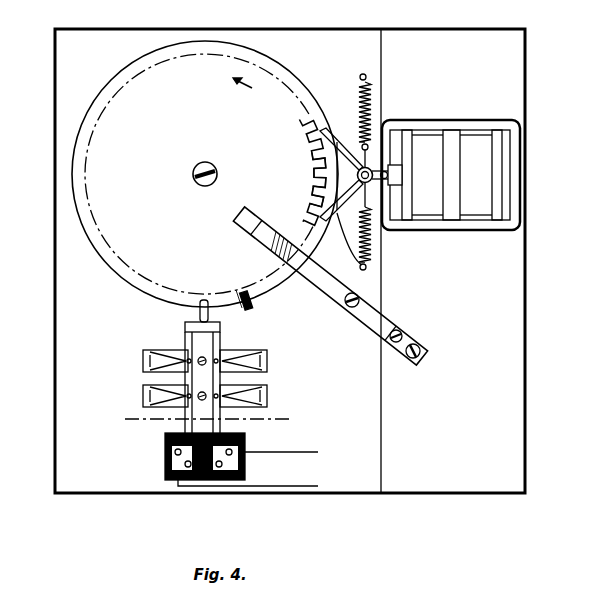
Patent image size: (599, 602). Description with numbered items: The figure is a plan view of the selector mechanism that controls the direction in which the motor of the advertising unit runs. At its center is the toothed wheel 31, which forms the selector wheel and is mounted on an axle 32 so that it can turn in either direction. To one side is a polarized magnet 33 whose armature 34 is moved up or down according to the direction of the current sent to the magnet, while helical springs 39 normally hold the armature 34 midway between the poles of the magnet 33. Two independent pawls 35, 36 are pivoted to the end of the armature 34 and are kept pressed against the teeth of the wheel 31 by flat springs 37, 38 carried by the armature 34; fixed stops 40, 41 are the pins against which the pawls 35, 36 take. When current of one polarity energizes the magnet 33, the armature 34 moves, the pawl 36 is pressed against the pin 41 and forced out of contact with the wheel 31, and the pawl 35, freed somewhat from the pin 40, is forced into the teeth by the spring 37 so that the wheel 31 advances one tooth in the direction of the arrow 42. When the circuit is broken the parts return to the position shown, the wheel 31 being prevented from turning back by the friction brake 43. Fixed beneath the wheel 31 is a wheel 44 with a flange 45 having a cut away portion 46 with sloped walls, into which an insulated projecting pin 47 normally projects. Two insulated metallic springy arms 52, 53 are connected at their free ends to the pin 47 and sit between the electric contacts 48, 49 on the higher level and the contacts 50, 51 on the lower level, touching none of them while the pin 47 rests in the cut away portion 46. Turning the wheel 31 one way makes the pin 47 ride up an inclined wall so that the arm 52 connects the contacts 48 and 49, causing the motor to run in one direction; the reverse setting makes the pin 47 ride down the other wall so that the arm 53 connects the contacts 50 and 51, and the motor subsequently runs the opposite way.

The toothed wheel 31 is at (176, 291).
The axle 32 is at (194, 173).
The polarized magnet 33 is at (503, 224).
The armature 34 is at (393, 170).
The pawl 35 is at (333, 130).
The pawl 36 is at (372, 246).
The flat spring 37 is at (355, 123).
The flat spring 38 is at (368, 232).
The helical springs 39 is at (368, 115).
The fixed stop 40 is at (345, 163).
The fixed stop 41 is at (345, 186).
The arrow 42 is at (244, 88).
The friction brake 43 is at (321, 281).
The wheel 44 is at (202, 396).
The flange 45 is at (113, 264).
The cut away portion 46 is at (251, 300).
The insulated projecting pin 47 is at (183, 307).
The electric contact 48 is at (145, 360).
The electric contact 49 is at (145, 395).
The electric contact 50 is at (267, 359).
The electric contact 51 is at (267, 394).
The springy arm 52 is at (188, 430).
The springy arm 53 is at (192, 434).